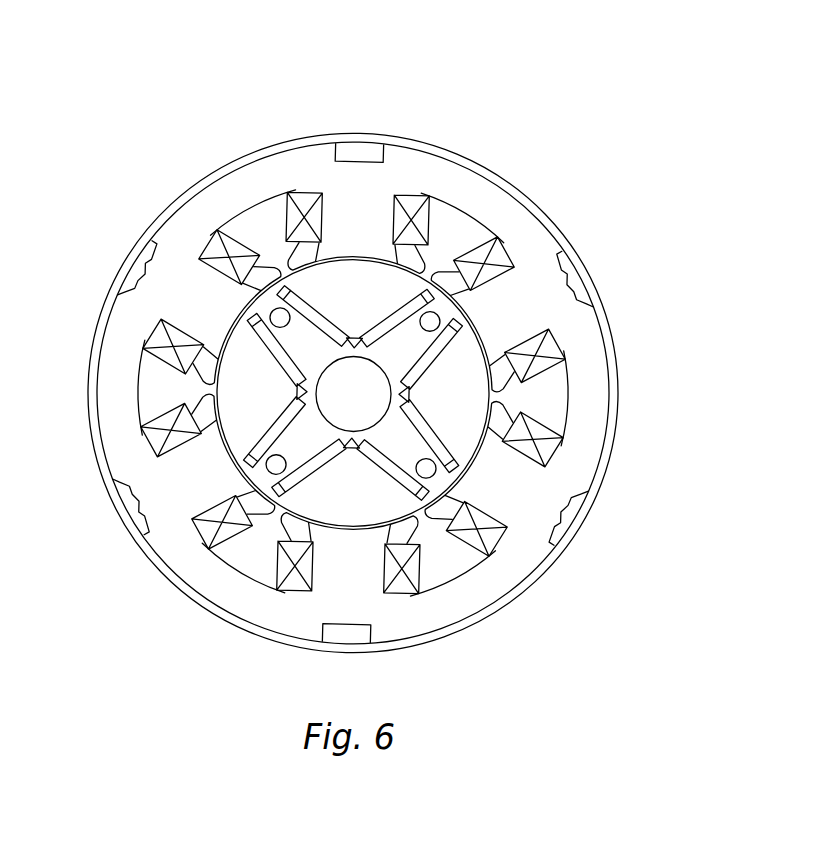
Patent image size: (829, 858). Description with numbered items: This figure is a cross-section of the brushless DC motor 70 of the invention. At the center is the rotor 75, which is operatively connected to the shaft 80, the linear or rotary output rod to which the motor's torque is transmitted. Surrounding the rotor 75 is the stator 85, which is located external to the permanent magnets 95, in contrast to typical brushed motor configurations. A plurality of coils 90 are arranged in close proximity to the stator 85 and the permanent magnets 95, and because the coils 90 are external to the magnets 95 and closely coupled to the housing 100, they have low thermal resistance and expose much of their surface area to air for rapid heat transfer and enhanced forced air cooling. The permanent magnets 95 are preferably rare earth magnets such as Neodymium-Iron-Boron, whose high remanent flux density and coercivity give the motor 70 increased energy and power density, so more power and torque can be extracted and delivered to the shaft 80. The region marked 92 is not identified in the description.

The BLDC motor 70 is at (372, 348).
The rotor 75 is at (243, 388).
The shaft 80 is at (363, 399).
The stator 85 is at (455, 191).
The coils 90 is at (309, 212).
The stator tooth 92 is at (542, 412).
The permanent magnets 95 is at (262, 438).
The housing 100 is at (606, 292).